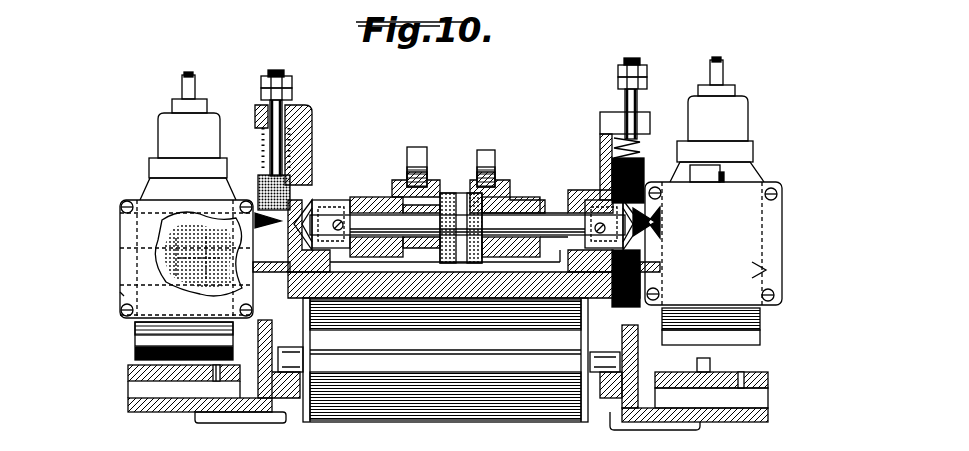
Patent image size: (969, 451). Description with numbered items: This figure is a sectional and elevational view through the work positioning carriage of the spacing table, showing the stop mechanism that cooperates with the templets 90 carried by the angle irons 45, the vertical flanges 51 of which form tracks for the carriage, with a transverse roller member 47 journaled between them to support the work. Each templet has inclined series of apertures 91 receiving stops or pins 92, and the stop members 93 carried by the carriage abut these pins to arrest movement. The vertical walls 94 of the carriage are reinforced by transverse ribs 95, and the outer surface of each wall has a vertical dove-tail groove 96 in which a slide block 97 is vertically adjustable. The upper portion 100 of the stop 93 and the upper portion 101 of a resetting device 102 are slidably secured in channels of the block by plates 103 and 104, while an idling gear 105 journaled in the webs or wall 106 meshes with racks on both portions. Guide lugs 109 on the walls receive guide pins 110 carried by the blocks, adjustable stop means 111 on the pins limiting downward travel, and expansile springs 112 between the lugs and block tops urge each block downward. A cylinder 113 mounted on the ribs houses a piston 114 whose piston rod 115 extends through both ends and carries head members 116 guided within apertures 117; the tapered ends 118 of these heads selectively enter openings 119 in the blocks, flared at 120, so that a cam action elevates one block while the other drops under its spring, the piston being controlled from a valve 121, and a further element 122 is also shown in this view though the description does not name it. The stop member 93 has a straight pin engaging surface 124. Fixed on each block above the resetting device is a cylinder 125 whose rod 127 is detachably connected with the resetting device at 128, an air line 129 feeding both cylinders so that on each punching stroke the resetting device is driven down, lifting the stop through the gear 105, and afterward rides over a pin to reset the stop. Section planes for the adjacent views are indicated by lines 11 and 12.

The section line 11- 11 is at (150, 45).
The section line 12- 12 is at (552, 213).
The angle irons 45 is at (170, 412).
The transverse roller members 47 is at (458, 380).
The vertical flanges 51 is at (300, 334).
The templets 90 is at (770, 380).
The apertures 91 is at (217, 382).
The stops or pins 92 is at (156, 367).
The stop members 93 is at (135, 354).
The vertical walls 94 is at (318, 110).
The transverse ribs 95 is at (550, 204).
The dove-tail groove 96 is at (292, 200).
The slide block 97 is at (263, 288).
The upper portion of the stop 100 is at (677, 231).
The upper portion of the resetting device 101 is at (145, 232).
The resetting device 102 is at (138, 336).
The plate 103 is at (770, 270).
The plate 104 is at (128, 294).
The idling gear 105 is at (121, 278).
The webs or wall 106 is at (196, 263).
The guide lugs 109 is at (259, 116).
The guide pins 110 is at (279, 72).
The stop means 111 is at (294, 81).
The expansile springs 112 is at (261, 144).
The cylinder 113 is at (459, 215).
The piston 114 is at (470, 180).
The piston rod 115 is at (376, 213).
The head members 116 is at (372, 212).
The apertures 117 is at (318, 206).
The tapered ends 118 is at (338, 210).
The openings 119 is at (234, 232).
The flared portion 120 is at (278, 331).
The valve 121 is at (493, 153).
The cap 122 is at (416, 150).
The templet pin engaging surface 124 is at (745, 341).
The cylinder 125 is at (160, 126).
The rod 127 is at (724, 172).
The connection 128 is at (724, 180).
The air line 129 is at (181, 84).